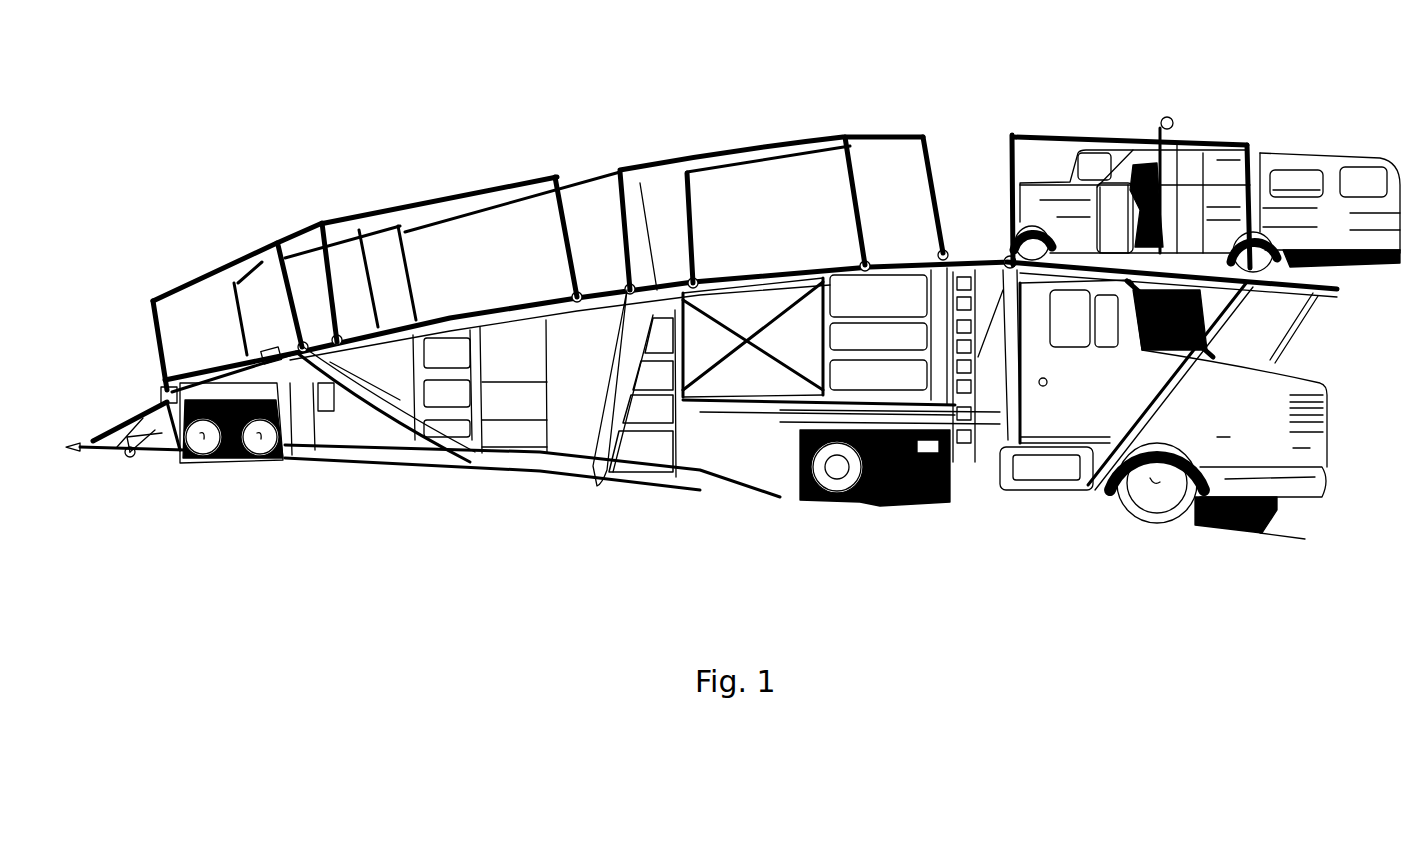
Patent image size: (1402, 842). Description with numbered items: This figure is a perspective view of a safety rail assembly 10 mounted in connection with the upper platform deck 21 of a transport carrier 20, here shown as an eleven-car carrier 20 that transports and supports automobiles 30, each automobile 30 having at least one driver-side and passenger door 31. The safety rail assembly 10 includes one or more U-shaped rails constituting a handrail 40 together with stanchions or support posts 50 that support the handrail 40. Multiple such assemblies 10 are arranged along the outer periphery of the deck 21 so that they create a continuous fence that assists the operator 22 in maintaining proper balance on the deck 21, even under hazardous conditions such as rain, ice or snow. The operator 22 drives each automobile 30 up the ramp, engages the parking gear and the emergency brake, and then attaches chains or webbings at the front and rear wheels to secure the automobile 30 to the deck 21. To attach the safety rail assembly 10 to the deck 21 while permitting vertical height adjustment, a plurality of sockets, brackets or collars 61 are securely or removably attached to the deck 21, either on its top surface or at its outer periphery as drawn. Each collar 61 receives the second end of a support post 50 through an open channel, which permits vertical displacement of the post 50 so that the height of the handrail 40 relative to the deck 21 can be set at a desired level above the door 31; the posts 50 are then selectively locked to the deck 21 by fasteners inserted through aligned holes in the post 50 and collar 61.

The safety rail assembly 10 is at (714, 195).
The transport carrier 20 is at (1053, 413).
The deck 21 is at (527, 300).
The operator 22 is at (1163, 173).
The automobile 30 is at (1270, 153).
The door 31 is at (1113, 180).
The handrail 40 is at (173, 285).
The support post 50 is at (157, 337).
The collar 61 is at (170, 450).